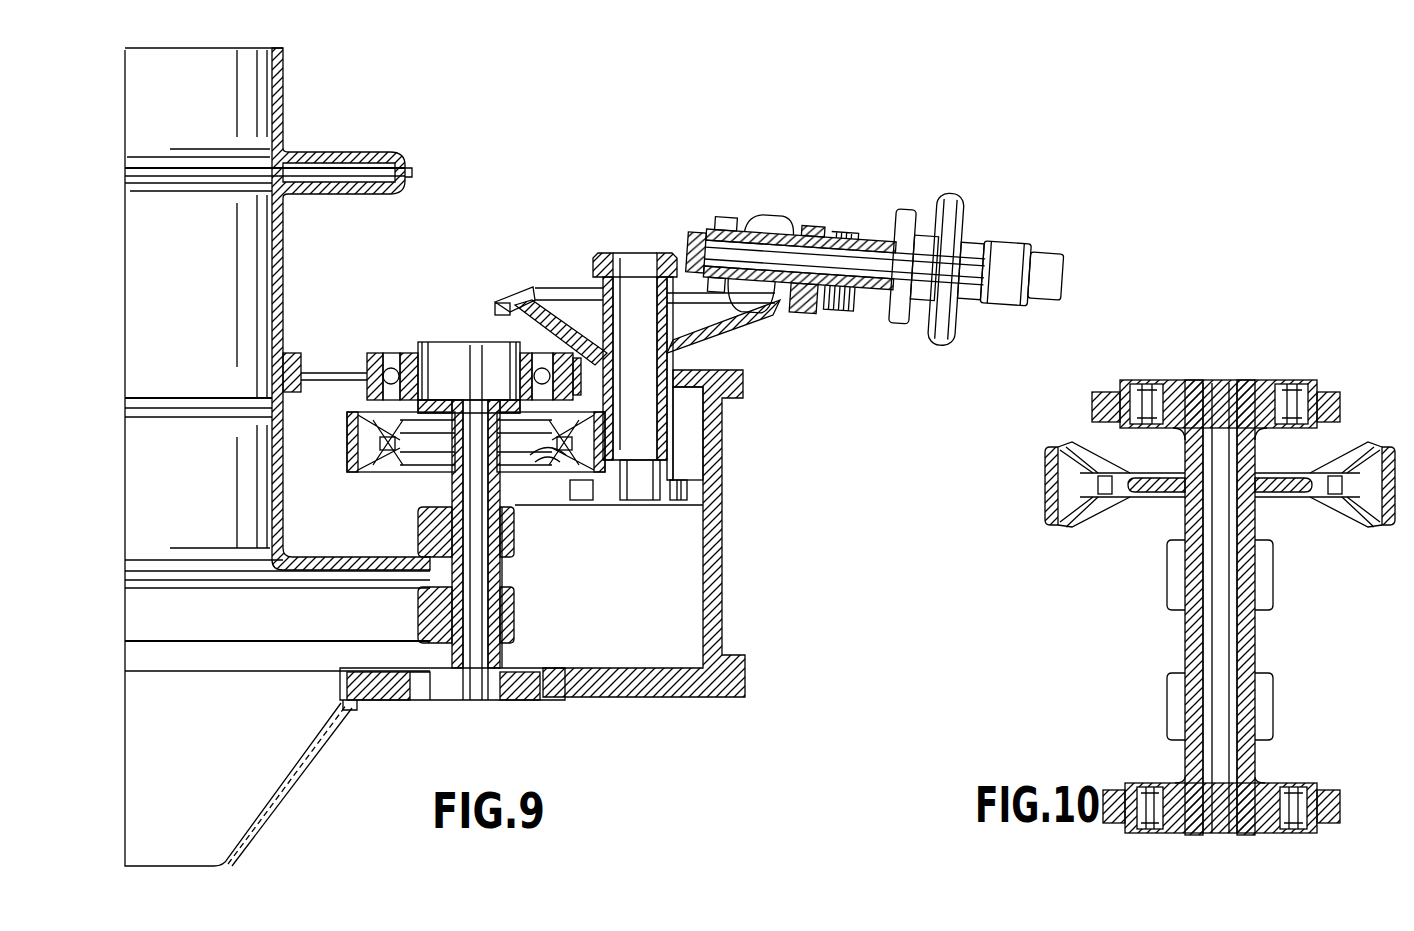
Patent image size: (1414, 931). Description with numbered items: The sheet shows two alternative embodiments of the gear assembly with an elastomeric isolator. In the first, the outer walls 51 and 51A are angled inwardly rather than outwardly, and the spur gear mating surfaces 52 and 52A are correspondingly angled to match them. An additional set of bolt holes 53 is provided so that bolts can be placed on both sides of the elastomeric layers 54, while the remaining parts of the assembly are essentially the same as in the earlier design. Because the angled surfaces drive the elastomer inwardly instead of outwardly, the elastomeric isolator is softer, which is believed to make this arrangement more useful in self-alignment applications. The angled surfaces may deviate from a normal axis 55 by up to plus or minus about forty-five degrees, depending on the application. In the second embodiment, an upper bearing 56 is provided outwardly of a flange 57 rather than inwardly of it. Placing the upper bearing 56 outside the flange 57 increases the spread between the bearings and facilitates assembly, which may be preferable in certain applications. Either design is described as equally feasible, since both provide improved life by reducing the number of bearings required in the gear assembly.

In FIG. 9, the outer wall 51 is at (524, 455).
In FIG. 9, the outer wall 51A is at (534, 470).
In FIG. 9, the spur gear mating surface 52 is at (555, 440).
In FIG. 9, the spur gear mating surface 52A is at (618, 470).
In FIG. 9, the bolt holes 53 is at (583, 445).
In FIG. 9, the elastomeric layers 54 is at (550, 408).
In FIG. 9, the normal axis 55 is at (548, 462).
In FIG. 10, the upper bearing 56 is at (1313, 383).
In FIG. 10, the flange 57 is at (1277, 490).